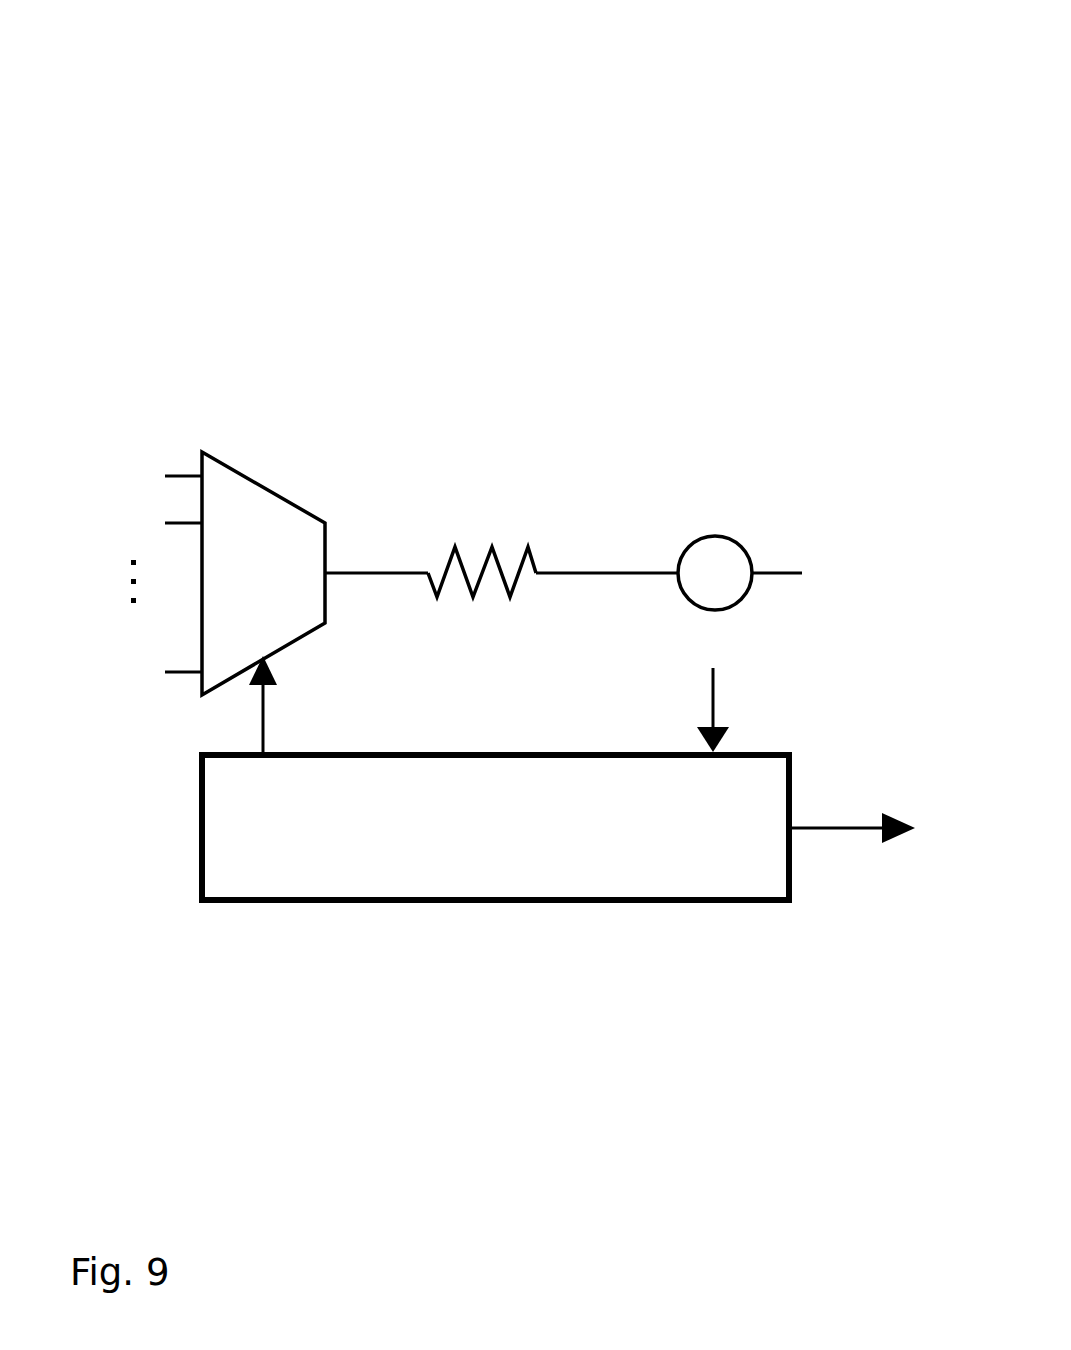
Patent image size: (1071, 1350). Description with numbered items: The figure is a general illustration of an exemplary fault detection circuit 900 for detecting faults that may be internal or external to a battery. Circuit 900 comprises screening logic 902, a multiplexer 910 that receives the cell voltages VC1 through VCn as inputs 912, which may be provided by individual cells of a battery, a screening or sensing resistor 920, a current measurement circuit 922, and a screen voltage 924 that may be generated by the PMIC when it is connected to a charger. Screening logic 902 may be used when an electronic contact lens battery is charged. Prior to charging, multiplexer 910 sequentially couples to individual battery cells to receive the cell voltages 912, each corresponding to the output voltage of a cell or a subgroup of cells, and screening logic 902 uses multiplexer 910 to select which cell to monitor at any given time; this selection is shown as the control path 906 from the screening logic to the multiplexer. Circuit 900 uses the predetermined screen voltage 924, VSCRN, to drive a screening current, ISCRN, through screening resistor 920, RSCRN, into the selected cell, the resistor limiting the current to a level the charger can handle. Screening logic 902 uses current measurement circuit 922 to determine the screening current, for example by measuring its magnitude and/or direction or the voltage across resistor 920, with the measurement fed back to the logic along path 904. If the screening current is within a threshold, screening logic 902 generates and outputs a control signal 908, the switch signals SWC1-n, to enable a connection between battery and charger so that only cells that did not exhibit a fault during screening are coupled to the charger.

The circuit 900 is at (628, 170).
The screening logic 902 is at (350, 907).
The screening current measurement input 904 is at (717, 713).
The multiplexer select control signal 906 is at (265, 720).
The control signal 908 is at (886, 808).
The multiplexer 910 is at (268, 487).
The inputs 912 is at (107, 440).
The screening resistor 920 is at (473, 545).
The current measurement circuit 922 is at (712, 533).
The screen voltage 924 is at (830, 537).